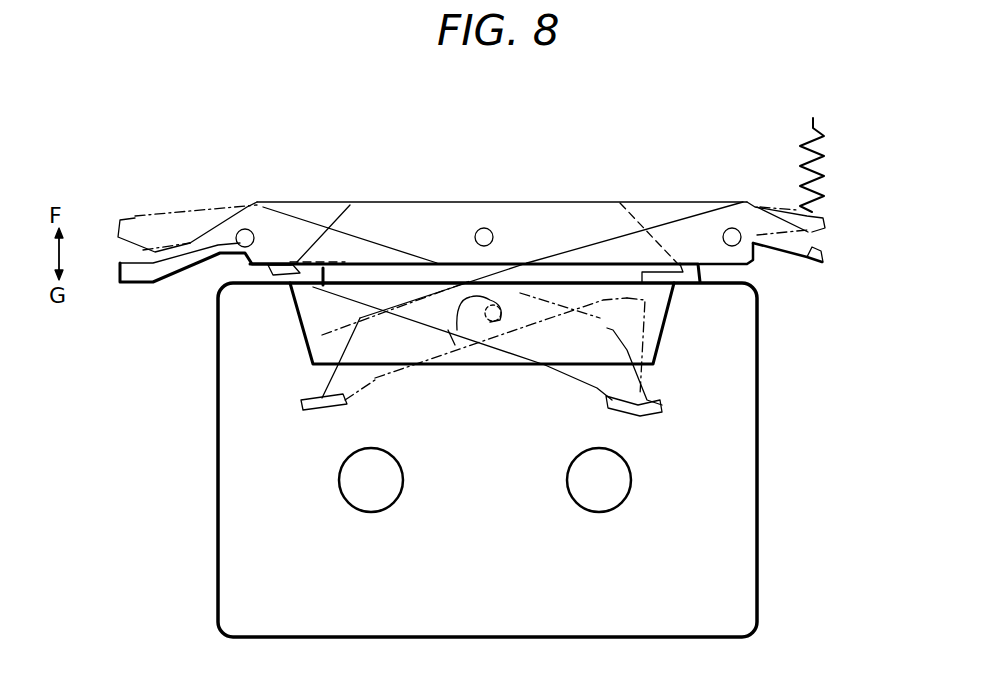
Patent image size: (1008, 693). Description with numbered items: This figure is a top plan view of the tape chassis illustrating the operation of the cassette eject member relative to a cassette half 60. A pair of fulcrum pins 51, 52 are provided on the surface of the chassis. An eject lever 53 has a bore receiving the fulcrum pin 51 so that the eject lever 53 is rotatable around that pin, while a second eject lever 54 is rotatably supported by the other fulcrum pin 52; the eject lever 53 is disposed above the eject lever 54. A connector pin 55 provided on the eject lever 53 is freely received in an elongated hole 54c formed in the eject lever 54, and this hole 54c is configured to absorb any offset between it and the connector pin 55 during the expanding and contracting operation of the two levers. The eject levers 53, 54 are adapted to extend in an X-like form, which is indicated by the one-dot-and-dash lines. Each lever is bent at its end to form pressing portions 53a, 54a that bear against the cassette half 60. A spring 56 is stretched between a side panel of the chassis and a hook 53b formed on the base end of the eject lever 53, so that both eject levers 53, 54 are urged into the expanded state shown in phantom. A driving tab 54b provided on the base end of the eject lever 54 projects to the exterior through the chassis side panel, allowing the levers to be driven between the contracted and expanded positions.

The fulcrum pin 51 is at (730, 228).
The fulcrum pin 52 is at (243, 228).
The eject lever 53 is at (665, 210).
The pressing portion 53a is at (280, 283).
The hook 53b is at (827, 252).
The eject lever 54 is at (327, 207).
The pressing portion 54a is at (692, 283).
The driving tab 54b is at (137, 217).
The elongated hole 54c is at (448, 343).
The connector pin 55 is at (484, 228).
The spring 56 is at (820, 200).
The cassette half 60 is at (740, 577).